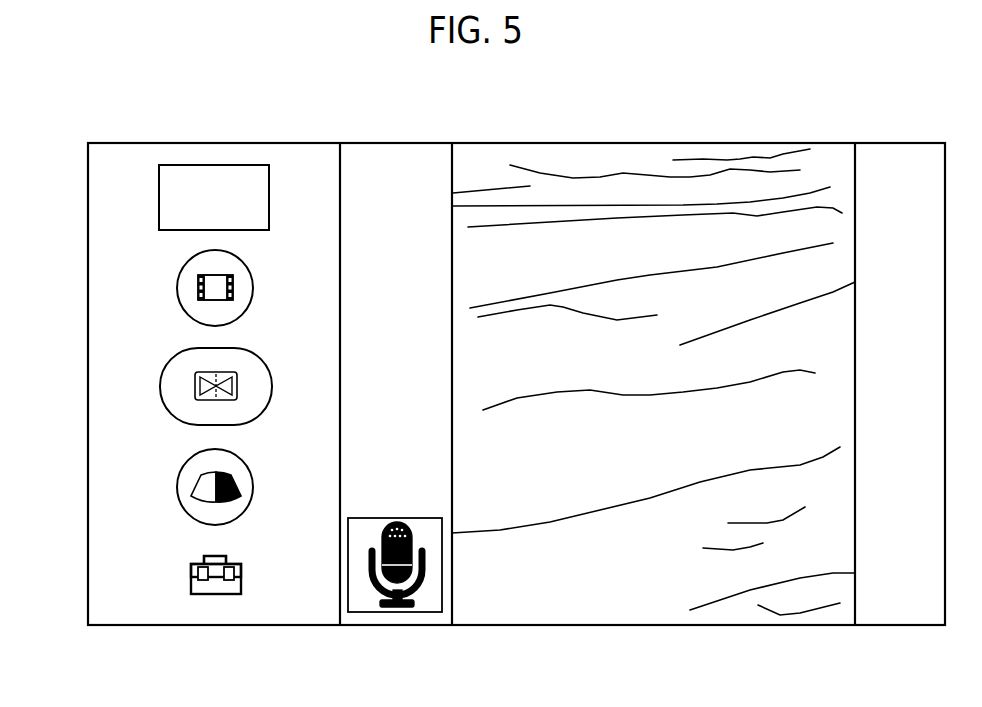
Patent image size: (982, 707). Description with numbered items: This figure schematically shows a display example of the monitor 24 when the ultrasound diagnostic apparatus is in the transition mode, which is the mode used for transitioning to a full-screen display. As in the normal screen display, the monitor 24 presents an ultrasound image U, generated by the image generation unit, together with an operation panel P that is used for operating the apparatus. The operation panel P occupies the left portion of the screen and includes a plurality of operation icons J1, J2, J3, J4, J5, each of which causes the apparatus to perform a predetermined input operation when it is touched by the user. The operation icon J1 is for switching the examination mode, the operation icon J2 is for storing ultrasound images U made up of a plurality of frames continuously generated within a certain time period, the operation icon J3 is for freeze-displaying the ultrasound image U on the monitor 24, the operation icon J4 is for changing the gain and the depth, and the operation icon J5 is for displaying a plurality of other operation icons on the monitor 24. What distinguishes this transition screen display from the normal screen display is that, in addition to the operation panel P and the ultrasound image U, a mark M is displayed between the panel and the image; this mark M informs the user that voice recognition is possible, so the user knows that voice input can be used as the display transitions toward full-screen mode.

The monitor 24 is at (895, 143).
The operation panel P is at (300, 185).
The ultrasound image U is at (628, 160).
The mark M is at (385, 612).
The operation icon J1 is at (159, 202).
The operation icon J2 is at (177, 288).
The operation icon J3 is at (160, 385).
The operation icon J4 is at (177, 482).
The operation icon J5 is at (191, 582).